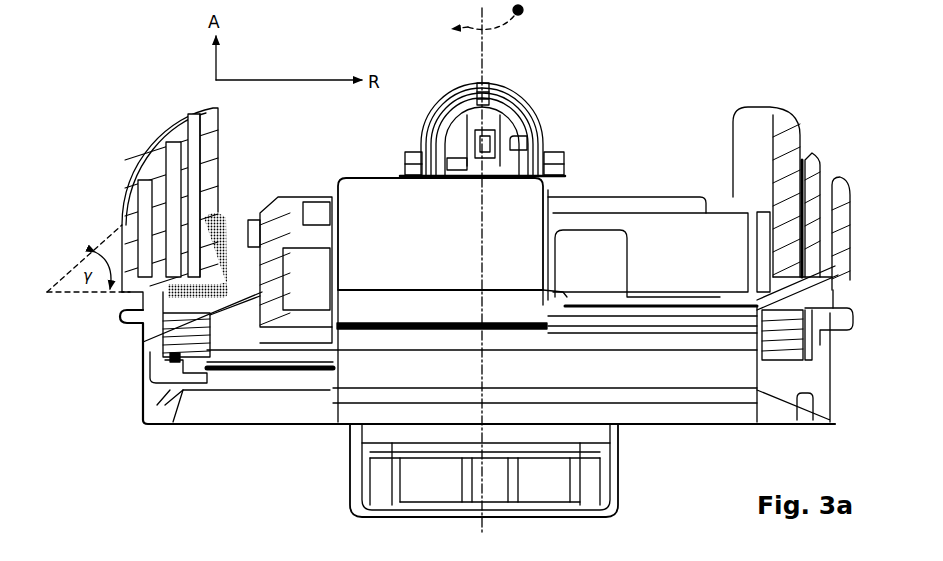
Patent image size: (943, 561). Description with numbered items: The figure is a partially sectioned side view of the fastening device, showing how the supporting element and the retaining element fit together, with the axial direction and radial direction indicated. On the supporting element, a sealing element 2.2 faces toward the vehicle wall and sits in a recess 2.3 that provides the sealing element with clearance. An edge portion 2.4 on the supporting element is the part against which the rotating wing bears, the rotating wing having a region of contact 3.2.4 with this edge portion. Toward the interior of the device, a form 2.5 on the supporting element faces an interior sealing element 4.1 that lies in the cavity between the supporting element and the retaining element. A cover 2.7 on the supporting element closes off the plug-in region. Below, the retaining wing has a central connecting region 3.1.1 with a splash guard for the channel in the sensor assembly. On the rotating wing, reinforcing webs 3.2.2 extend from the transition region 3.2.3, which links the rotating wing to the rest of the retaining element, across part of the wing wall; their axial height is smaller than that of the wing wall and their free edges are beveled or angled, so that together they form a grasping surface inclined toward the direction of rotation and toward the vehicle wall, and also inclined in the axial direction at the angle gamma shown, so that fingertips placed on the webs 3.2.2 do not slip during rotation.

The sealing element 2.2 is at (137, 413).
The recess for the sealing element and clearance 2.3 is at (159, 358).
The edge portion 2.4 is at (820, 305).
The form on the supporting element toward the interior sealing element 2.5 is at (174, 369).
The cover for plug-in region 2.7 is at (415, 236).
The central connecting region 3.1.1 is at (500, 492).
The reinforcing webs 3.2.2 is at (807, 157).
The transition region 3.2.3 is at (217, 280).
The rotating-wing region of contact with the edge portion 3.2.4 is at (838, 294).
The sealing element in the cavity 4.1 is at (187, 338).